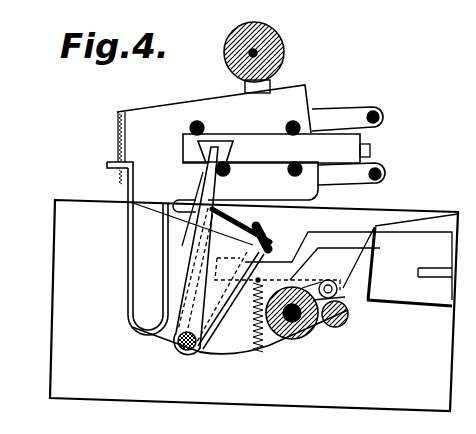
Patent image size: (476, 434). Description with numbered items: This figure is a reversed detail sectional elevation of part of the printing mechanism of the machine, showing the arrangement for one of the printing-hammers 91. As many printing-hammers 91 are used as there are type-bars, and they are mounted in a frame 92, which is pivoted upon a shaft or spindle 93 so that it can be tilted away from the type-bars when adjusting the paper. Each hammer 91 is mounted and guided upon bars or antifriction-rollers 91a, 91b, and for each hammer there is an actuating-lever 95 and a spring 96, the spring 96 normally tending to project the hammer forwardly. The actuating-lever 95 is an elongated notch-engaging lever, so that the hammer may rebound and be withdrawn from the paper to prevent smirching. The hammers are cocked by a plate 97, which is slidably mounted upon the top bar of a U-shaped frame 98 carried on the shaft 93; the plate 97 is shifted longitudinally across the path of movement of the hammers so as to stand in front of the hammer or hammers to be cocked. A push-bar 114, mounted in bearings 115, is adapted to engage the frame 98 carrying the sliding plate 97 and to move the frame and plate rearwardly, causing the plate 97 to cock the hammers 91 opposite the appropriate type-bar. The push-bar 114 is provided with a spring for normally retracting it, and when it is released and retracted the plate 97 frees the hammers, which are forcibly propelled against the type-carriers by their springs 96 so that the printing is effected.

The printing-hammer 91 is at (276, 142).
The bar or antifriction-roller 91a is at (292, 128).
The bar or antifriction-roller 91b is at (294, 174).
The frame 92 is at (209, 210).
The shaft or spindle 93 is at (189, 352).
The actuating-lever 95 is at (218, 188).
The spring 96 is at (188, 248).
The plate 97 is at (255, 222).
The U-shaped frame 98 is at (218, 302).
The push-bar 114 is at (340, 230).
The bearings 115 is at (370, 301).